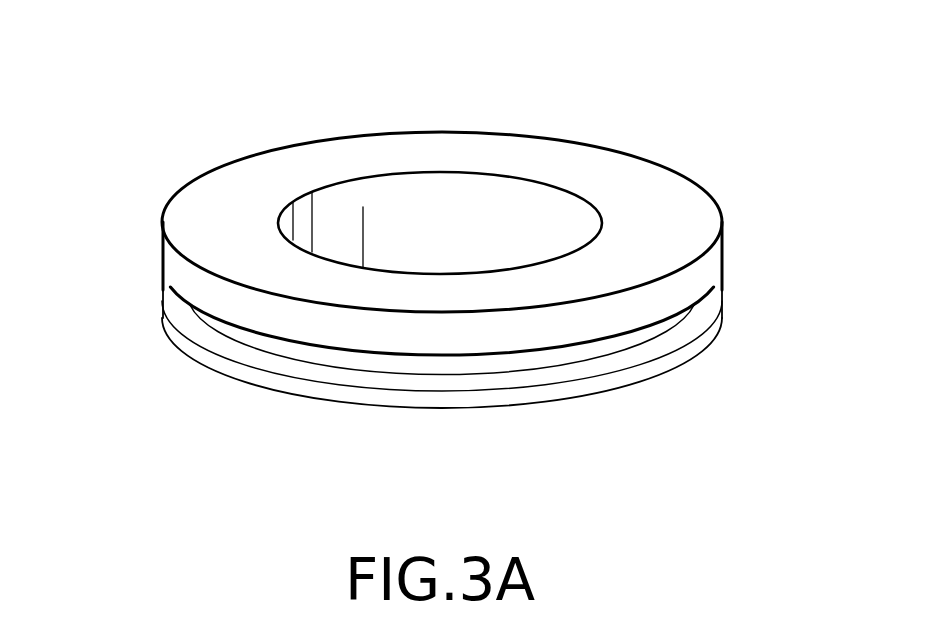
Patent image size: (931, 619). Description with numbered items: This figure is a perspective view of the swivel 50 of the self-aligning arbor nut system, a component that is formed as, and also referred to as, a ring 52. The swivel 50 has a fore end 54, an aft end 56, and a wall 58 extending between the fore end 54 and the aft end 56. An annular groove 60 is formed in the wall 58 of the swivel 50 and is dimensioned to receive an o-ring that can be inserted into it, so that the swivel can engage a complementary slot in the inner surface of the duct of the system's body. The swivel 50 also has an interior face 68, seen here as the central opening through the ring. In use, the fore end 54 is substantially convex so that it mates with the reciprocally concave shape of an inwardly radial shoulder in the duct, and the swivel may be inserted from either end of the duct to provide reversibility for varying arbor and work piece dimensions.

The swivel 50 is at (435, 246).
The ring 52 is at (417, 185).
The fore end 54 is at (250, 385).
The aft end 56 is at (402, 150).
The wall 58 is at (163, 250).
The annular groove 60 is at (703, 323).
The interior face 68 is at (550, 205).